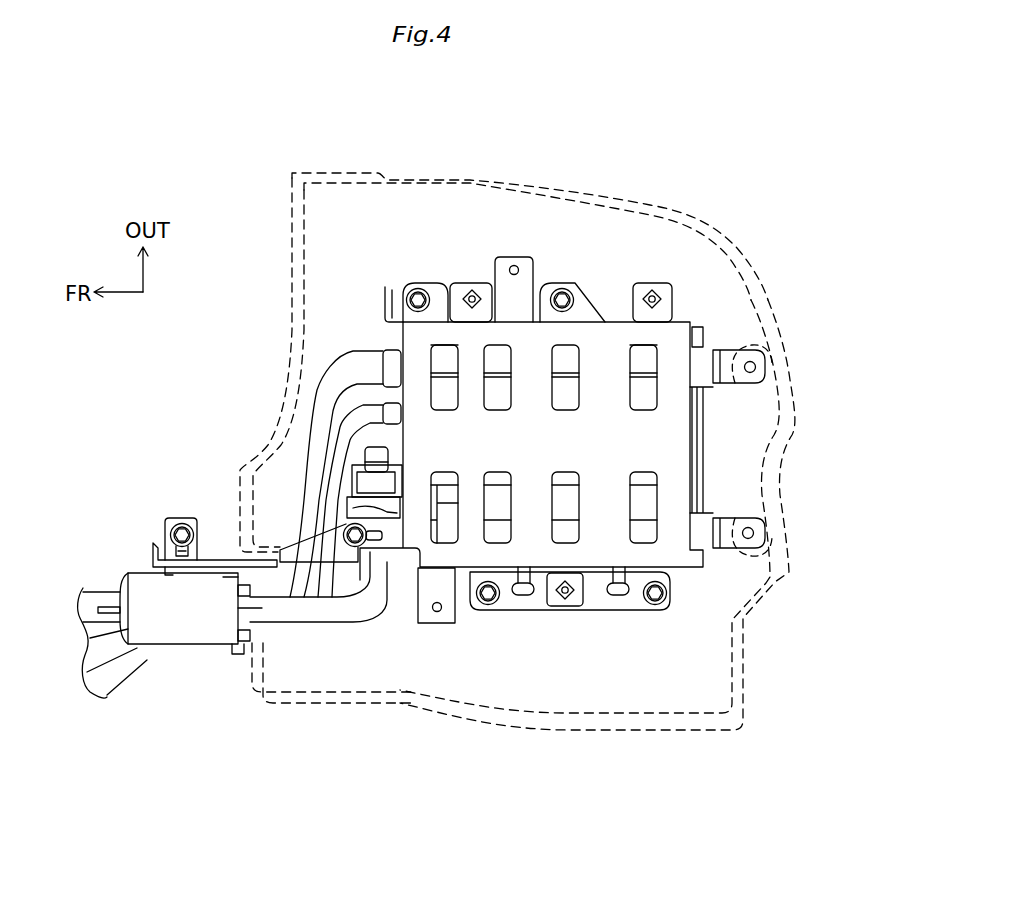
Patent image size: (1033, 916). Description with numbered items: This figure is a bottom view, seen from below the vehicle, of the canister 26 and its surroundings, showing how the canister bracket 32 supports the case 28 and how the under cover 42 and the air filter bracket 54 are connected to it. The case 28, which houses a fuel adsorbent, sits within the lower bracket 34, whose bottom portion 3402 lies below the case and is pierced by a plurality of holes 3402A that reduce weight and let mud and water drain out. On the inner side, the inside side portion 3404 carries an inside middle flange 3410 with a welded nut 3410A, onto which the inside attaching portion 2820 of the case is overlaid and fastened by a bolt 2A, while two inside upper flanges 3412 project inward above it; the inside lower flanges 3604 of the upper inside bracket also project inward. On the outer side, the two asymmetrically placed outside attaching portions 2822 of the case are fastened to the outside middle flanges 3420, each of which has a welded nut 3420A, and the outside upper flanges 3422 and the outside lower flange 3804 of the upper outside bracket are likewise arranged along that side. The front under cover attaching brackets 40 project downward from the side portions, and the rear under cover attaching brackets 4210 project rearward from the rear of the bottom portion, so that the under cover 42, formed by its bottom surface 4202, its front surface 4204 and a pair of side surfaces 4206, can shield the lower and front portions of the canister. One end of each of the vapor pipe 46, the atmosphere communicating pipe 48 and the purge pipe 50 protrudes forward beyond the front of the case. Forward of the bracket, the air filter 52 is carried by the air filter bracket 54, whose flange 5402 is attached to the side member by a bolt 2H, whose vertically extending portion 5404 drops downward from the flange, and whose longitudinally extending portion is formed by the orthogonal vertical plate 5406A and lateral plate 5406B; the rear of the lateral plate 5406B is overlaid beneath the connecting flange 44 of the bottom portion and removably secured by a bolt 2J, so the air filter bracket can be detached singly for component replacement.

The lower bracket 34 is at (530, 377).
The bottom portion 3402 is at (527, 340).
The canister bracket 32 is at (470, 340).
The holes 3402A is at (560, 368).
The canister 26 is at (645, 393).
The case 28 is at (728, 297).
The inside side portion 3404 is at (597, 575).
The outside lower flange 3804 is at (420, 283).
The outside upper flanges 3422 is at (397, 300).
The outside middle flanges 3420 is at (465, 290).
The outside attaching portions 2822 is at (599, 224).
The nut 3420A is at (486, 283).
The front under cover attaching brackets 40 is at (517, 255).
The inside upper flanges 3412 is at (471, 612).
The bolt 2A is at (488, 593).
The inside middle flange 3410 is at (593, 615).
The inside attaching portion 2820 is at (608, 670).
The nut 3410A is at (590, 600).
The inside lower flanges 3604 is at (537, 610).
The under cover 42 is at (795, 408).
The rear under cover attaching brackets 4210 is at (737, 347).
The side surfaces 4206 is at (378, 178).
The bottom surface 4202 is at (328, 213).
The front surface 4204 is at (290, 297).
The purge pipe 50 is at (353, 402).
The bolt 2J is at (335, 532).
The vapor pipe 46 is at (347, 338).
The atmosphere communicating pipe 48 is at (355, 547).
The connecting flange 44 is at (367, 580).
The lateral plate 5406B is at (337, 620).
The air filter 52 is at (198, 630).
The vertical plate 5406A is at (237, 580).
The air filter bracket 54 is at (228, 546).
The vertically extending portion 5404 is at (217, 555).
The flange 5402 is at (168, 526).
The bolt 2H is at (180, 522).